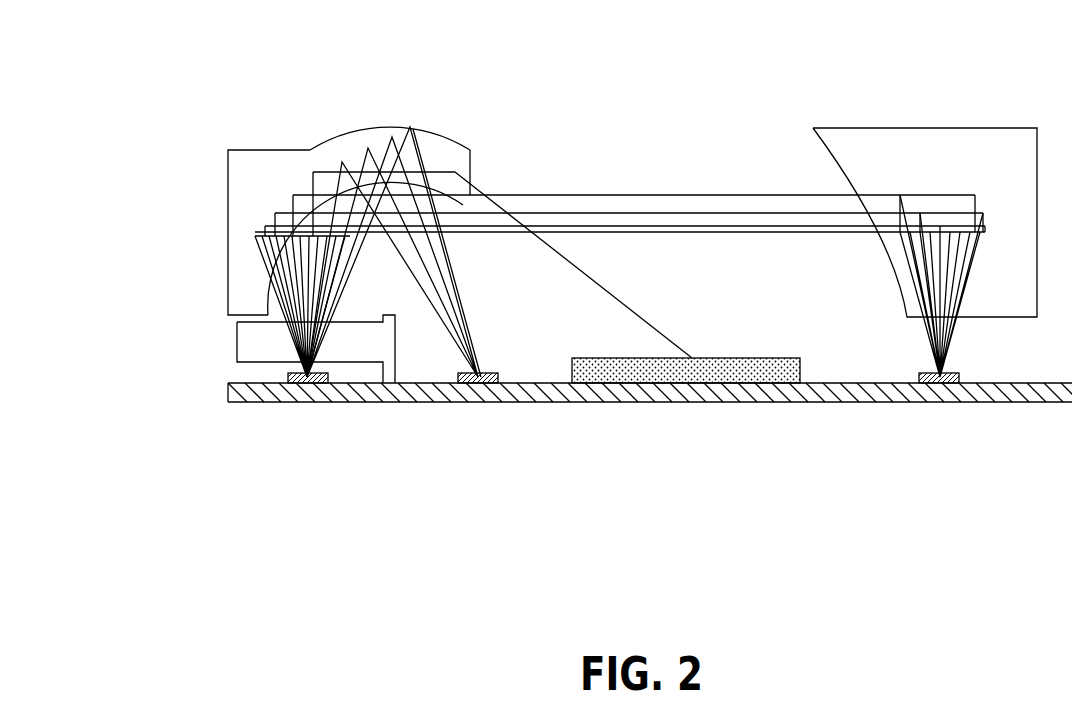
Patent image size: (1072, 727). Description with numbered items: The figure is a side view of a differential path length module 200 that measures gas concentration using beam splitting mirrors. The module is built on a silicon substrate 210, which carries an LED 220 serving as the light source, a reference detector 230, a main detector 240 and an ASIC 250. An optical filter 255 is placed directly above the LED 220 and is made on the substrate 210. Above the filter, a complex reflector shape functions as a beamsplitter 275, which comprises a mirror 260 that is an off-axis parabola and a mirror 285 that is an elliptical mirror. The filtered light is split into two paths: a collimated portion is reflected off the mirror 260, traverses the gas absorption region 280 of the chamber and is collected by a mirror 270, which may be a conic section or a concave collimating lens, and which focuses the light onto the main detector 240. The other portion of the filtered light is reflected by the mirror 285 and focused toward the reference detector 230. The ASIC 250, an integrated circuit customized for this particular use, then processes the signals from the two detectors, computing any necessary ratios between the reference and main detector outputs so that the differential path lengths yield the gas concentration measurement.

The differential path length module 200 is at (218, 528).
The substrate 210 is at (215, 397).
The LED 220 is at (303, 390).
The reference detector 230 is at (478, 390).
The main detector 240 is at (940, 390).
The ASIC 250 is at (712, 390).
The optical filter 255 is at (237, 345).
The mirror 260 is at (275, 187).
The mirror 270 is at (962, 163).
The beamsplitter 275 is at (395, 124).
The gas absorption region 280 is at (660, 182).
The mirror 285 is at (432, 158).